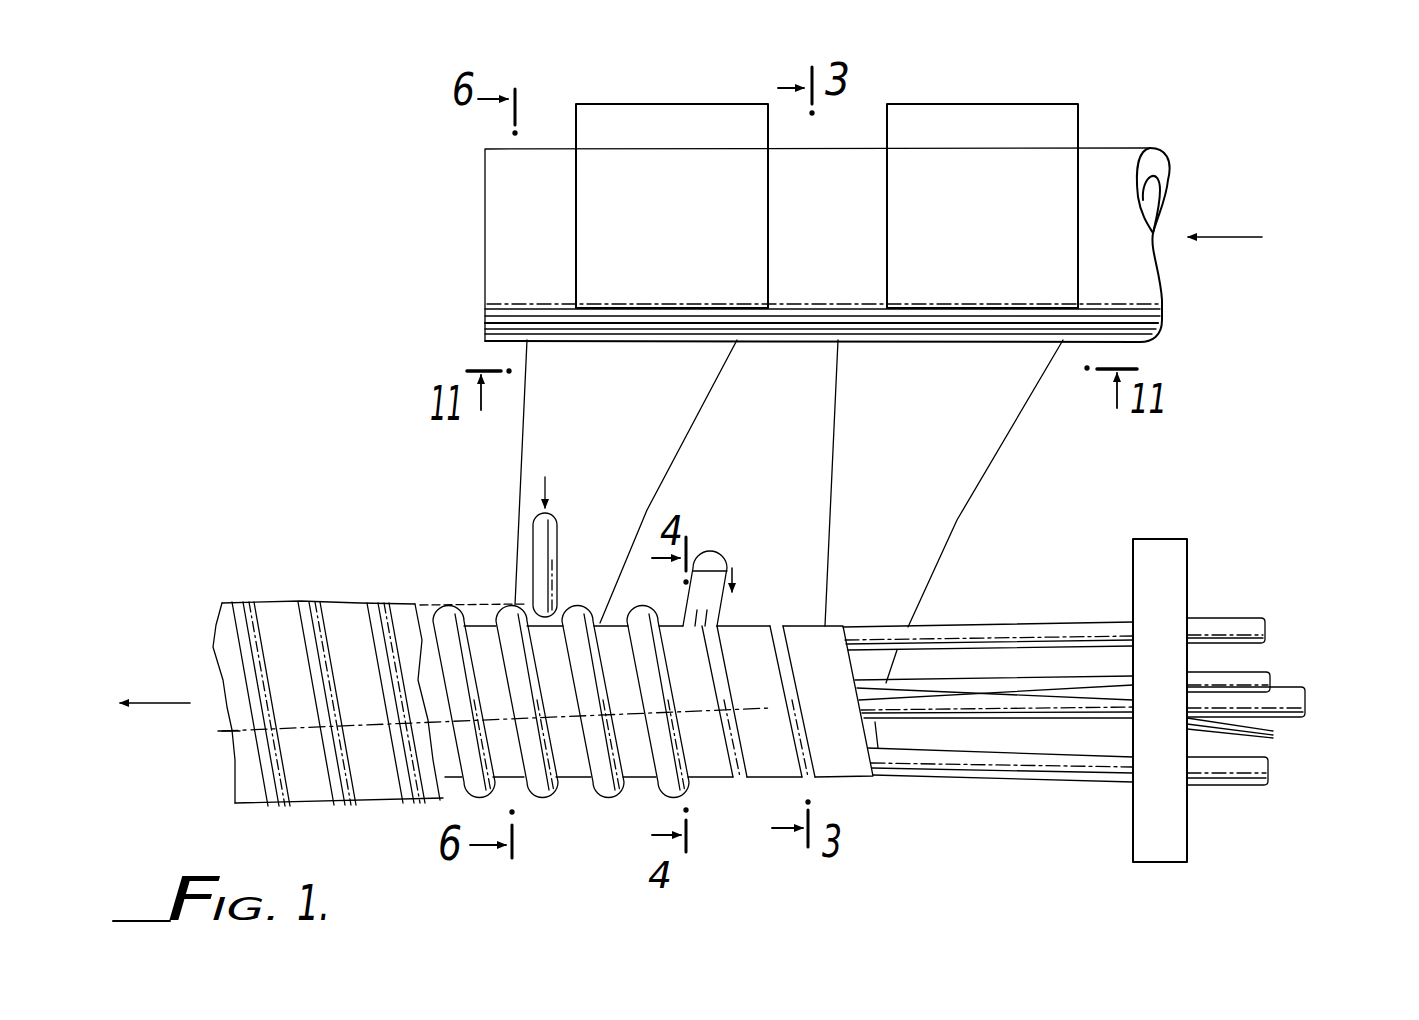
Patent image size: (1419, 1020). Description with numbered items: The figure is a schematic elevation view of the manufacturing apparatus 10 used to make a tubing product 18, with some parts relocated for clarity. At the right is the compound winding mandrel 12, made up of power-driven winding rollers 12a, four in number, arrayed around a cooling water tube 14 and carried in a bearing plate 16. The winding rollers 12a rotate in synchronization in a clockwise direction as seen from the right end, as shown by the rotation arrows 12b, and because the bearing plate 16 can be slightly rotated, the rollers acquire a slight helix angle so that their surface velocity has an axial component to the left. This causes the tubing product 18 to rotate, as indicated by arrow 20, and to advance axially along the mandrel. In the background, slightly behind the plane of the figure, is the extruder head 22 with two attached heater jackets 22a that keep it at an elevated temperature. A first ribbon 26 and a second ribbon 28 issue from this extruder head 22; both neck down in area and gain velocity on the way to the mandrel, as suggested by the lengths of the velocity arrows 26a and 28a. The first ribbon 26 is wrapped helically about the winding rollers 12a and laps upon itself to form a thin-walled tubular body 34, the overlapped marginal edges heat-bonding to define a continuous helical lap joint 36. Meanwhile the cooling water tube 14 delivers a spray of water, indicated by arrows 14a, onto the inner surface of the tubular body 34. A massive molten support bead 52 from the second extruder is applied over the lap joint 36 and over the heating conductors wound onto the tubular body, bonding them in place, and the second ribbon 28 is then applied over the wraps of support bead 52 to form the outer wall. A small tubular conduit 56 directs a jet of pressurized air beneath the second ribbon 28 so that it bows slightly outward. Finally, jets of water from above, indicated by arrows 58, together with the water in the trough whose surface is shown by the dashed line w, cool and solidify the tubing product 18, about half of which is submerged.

The manufacturing apparatus 10 is at (1188, 486).
The compound winding mandrel 12 is at (958, 616).
The winding rollers 12a is at (1040, 627).
The rotation arrows 12b is at (1232, 646).
The cooling water tube 14 is at (1290, 717).
The water spray arrows 14a is at (1326, 702).
The bearing plate 16 is at (1163, 862).
The tubing product 18 is at (296, 797).
The rotation arrow 20 is at (297, 580).
The extruder head 22 is at (1128, 153).
The heater jackets 22a is at (692, 235).
The first ribbon 26 is at (975, 460).
The velocity arrows 26a is at (912, 464).
The second ribbon 28 is at (673, 452).
The velocity arrows 28a is at (601, 452).
The thin-walled tubular body 34 is at (767, 778).
The continuous helical lap joint 36 is at (767, 615).
The support bead 52 is at (492, 780).
The tubular conduit 56 is at (540, 537).
The water jet arrows 58 is at (295, 535).
The water surface line w is at (232, 742).